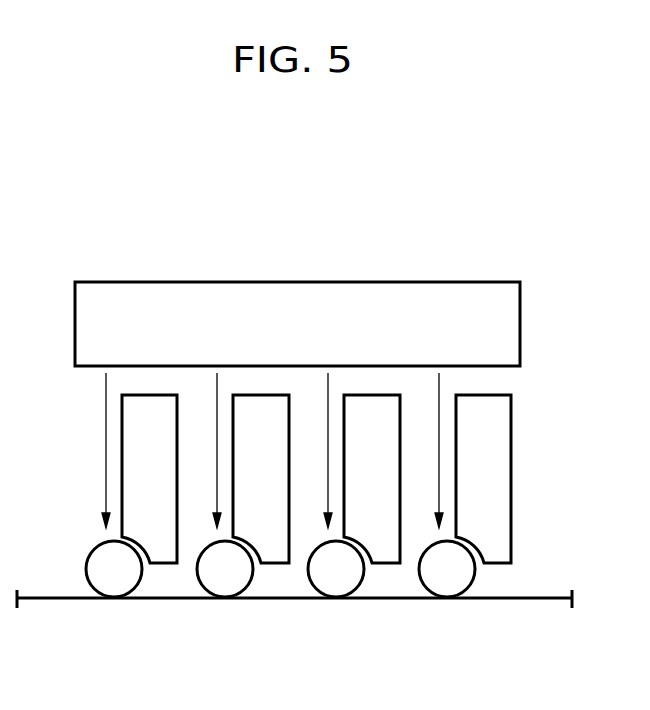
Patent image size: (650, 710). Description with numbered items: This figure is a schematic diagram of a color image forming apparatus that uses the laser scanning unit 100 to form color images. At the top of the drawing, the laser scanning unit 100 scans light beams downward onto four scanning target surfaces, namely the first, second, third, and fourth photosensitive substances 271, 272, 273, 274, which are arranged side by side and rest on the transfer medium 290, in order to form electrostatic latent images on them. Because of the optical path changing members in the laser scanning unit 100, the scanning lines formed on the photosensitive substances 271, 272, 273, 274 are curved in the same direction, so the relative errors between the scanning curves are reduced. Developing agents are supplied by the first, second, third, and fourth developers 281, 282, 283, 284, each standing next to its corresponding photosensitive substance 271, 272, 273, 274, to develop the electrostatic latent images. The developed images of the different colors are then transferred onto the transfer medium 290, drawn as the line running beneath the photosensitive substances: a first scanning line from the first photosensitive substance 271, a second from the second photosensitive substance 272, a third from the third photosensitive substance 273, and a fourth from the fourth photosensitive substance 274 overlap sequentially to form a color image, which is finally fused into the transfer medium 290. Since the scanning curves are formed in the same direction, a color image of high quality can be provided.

The laser scanning unit 100 is at (293, 283).
The first photosensitive substance 271 is at (225, 592).
The second photosensitive substance 272 is at (113, 592).
The third photosensitive substance 273 is at (336, 592).
The fourth photosensitive substance 274 is at (447, 592).
The first developer 281 is at (278, 563).
The second developer 282 is at (163, 563).
The third developer 283 is at (389, 563).
The fourth developer 284 is at (500, 563).
The transfer medium 290 is at (552, 599).